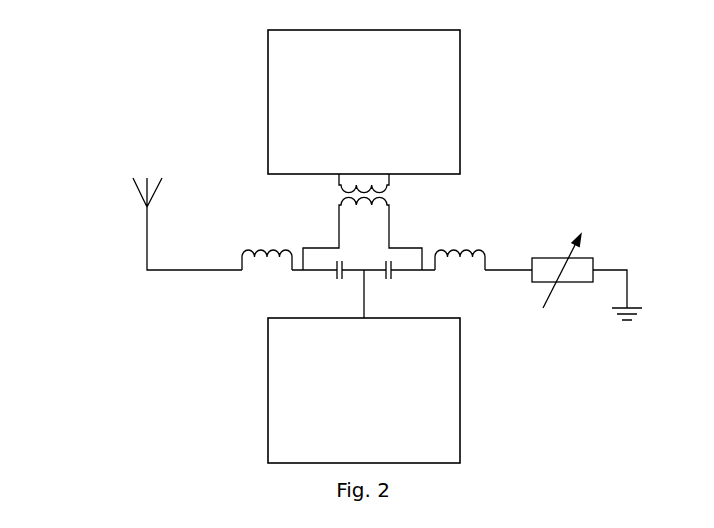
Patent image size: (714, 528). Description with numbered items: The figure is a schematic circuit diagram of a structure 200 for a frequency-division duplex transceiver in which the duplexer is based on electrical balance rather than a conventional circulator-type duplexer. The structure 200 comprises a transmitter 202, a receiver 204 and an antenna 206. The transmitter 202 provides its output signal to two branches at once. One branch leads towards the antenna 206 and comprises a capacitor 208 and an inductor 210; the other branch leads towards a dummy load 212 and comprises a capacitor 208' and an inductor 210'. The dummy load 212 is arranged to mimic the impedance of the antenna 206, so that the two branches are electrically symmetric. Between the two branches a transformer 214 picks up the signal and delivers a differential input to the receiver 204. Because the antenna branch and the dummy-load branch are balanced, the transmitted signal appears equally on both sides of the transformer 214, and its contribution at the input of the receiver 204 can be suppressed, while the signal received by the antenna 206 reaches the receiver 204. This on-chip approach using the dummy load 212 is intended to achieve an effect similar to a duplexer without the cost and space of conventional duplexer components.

The structure 200 is at (455, 212).
The transmitter 202 is at (281, 341).
The receiver 204 is at (283, 135).
The antenna 206 is at (143, 207).
The capacitor 208 is at (305, 282).
The capacitor 208' is at (427, 282).
The inductor 210 is at (237, 278).
The inductor 210' is at (485, 286).
The dummy load 212 is at (572, 282).
The transformer 214 is at (352, 196).